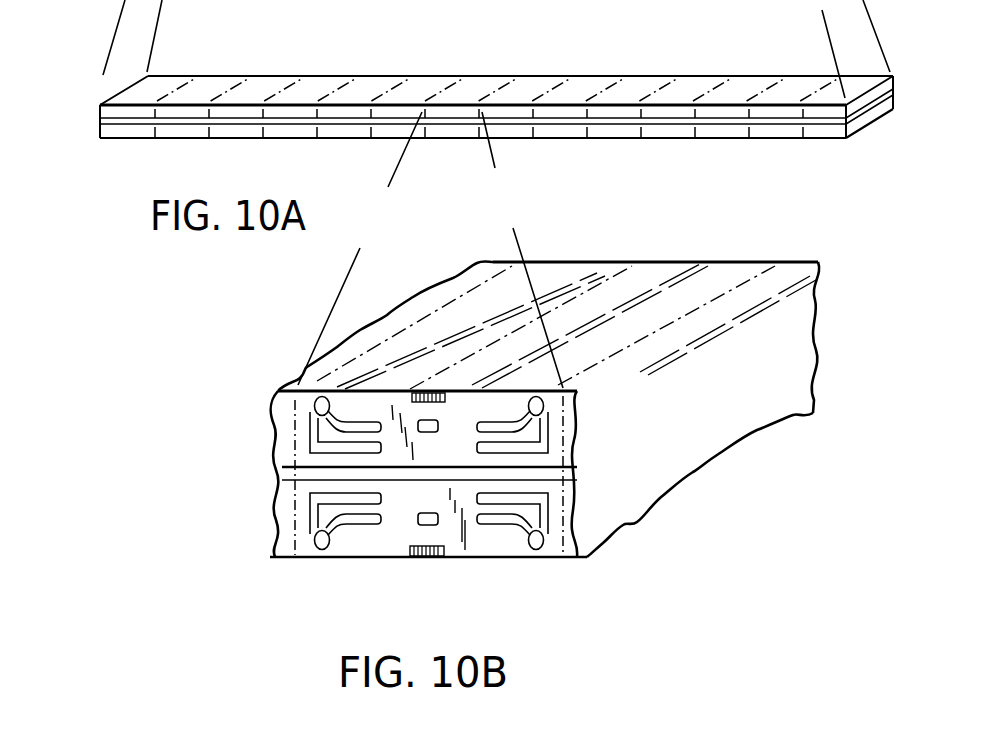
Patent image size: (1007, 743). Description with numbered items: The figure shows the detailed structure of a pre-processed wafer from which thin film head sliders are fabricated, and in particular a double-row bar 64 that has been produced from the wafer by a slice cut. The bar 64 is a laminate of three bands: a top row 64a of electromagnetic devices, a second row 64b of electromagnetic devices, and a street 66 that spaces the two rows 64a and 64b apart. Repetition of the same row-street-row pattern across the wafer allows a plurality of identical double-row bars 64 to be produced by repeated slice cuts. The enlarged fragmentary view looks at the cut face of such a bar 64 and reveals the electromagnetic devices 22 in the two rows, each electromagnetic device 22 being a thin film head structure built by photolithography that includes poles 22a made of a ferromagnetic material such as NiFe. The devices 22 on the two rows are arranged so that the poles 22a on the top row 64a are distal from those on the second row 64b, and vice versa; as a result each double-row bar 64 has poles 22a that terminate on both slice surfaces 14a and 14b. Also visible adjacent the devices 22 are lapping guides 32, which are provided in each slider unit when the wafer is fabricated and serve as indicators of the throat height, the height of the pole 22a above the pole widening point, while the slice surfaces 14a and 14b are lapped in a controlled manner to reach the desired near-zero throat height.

In FIG. 10A, the slice surface 14a is at (483, 80).
In FIG. 10B, the slice surface 14a is at (683, 246).
In FIG. 10A, the slice surface 14b is at (658, 140).
In FIG. 10B, the slice surface 14b is at (462, 558).
In FIG. 10A, the double-row bar 64 is at (662, 61).
In FIG. 10A, the top row 64a is at (100, 106).
In FIG. 10A, the street 66 is at (100, 121).
In FIG. 10A, the second row 64b is at (100, 135).
In FIG. 10B, the poles 22a is at (315, 396).
In FIG. 10B, the electromagnetic device 22 is at (496, 520).
In FIG. 10B, the lapping guide 32 is at (421, 558).